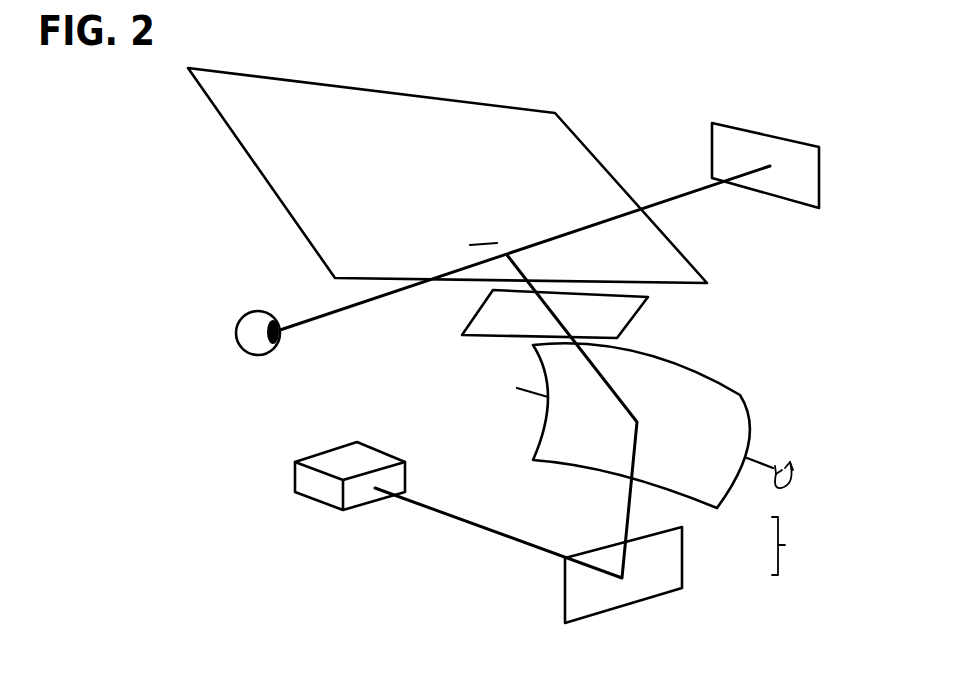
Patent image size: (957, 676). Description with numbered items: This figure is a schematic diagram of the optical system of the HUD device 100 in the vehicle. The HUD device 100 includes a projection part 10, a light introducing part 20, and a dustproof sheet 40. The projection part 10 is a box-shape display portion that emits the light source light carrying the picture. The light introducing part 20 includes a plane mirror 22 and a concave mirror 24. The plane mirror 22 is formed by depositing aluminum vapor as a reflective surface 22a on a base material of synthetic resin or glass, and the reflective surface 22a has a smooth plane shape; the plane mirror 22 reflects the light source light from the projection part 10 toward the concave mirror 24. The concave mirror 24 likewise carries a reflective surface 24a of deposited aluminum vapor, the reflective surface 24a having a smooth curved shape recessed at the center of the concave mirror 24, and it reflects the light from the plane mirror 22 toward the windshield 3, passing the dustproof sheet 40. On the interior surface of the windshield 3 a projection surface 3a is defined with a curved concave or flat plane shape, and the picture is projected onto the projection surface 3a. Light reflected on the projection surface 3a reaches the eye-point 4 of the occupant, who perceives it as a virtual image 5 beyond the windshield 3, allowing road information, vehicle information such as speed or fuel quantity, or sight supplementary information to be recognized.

The windshield 3 is at (445, 99).
The projection surface 3a is at (470, 245).
The eye-point 4 is at (255, 311).
The virtual image 5 is at (755, 132).
The projection part 10 is at (332, 508).
The light introducing part 20 is at (794, 546).
The plane mirror 22 is at (682, 577).
The reflective surface 22a is at (592, 550).
The concave mirror 24 is at (738, 490).
The reflective surface 24a is at (580, 428).
The dustproof sheet 40 is at (632, 320).
The HUD device 100 is at (392, 585).